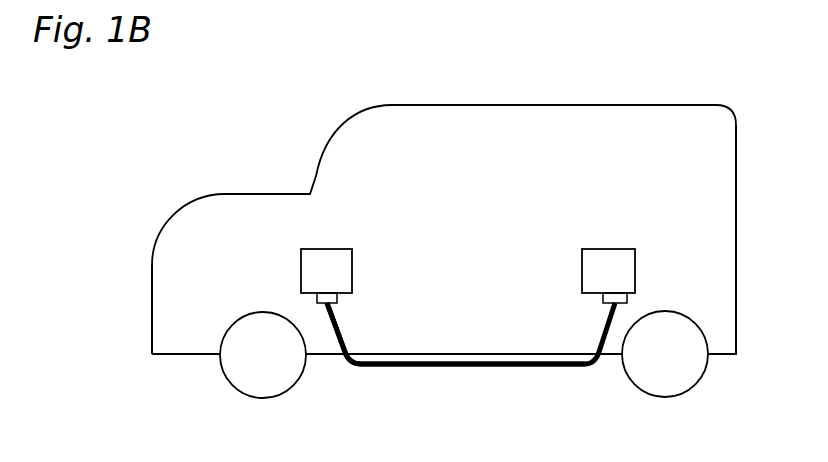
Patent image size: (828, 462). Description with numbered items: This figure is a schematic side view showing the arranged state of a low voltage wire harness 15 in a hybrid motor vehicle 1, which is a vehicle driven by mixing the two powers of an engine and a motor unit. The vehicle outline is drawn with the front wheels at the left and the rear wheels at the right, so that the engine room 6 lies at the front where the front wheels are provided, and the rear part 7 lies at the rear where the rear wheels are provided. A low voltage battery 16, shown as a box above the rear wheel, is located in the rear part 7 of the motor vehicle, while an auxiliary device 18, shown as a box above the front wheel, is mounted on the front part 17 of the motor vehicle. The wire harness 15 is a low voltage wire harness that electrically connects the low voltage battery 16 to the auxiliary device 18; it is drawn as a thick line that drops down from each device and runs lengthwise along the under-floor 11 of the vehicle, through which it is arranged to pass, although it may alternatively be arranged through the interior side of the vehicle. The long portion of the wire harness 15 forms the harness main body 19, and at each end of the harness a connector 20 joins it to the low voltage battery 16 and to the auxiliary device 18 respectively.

The hybrid motor vehicle 1 is at (590, 104).
The engine room 6 is at (168, 328).
The rear part 7 is at (719, 320).
The under-floor 11 is at (538, 357).
The wire harness 15 is at (381, 367).
The low voltage battery 16 is at (609, 258).
The front part 17 is at (283, 210).
The auxiliary device 18 is at (338, 258).
The harness main body 19 is at (349, 346).
The connector 20 is at (318, 298).